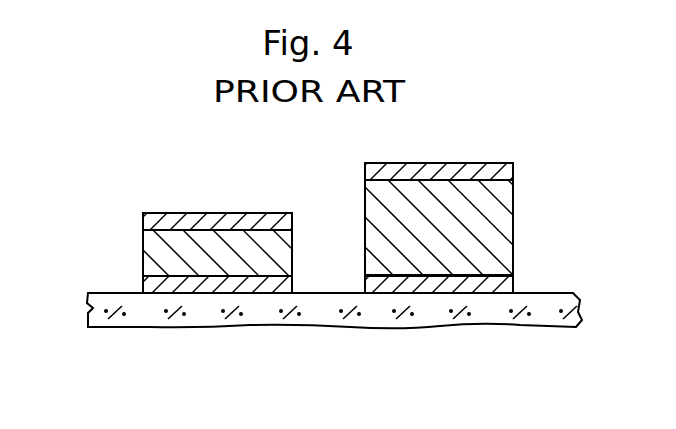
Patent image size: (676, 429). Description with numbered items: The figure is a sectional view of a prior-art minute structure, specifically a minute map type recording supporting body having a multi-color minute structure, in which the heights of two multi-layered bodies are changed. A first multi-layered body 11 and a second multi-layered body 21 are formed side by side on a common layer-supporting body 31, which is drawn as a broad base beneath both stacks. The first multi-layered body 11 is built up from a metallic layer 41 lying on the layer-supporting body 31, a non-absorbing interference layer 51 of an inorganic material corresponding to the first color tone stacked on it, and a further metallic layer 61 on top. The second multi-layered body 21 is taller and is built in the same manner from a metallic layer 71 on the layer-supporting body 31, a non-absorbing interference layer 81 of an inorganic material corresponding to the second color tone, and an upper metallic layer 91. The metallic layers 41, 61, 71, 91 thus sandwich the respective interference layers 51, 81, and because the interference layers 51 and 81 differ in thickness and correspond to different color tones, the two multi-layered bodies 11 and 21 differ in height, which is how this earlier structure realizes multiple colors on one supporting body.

The multi-layered body 11 is at (189, 236).
The multi-layered body 21 is at (464, 212).
The layer-supporting body 31 is at (90, 306).
The metallic layer 41 is at (146, 287).
The non-absorbing interference layer 51 is at (152, 253).
The metallic layer 61 is at (189, 223).
The metallic layer 71 is at (508, 286).
The non-absorbing interference layer 81 is at (505, 217).
The metallic layer 91 is at (514, 172).